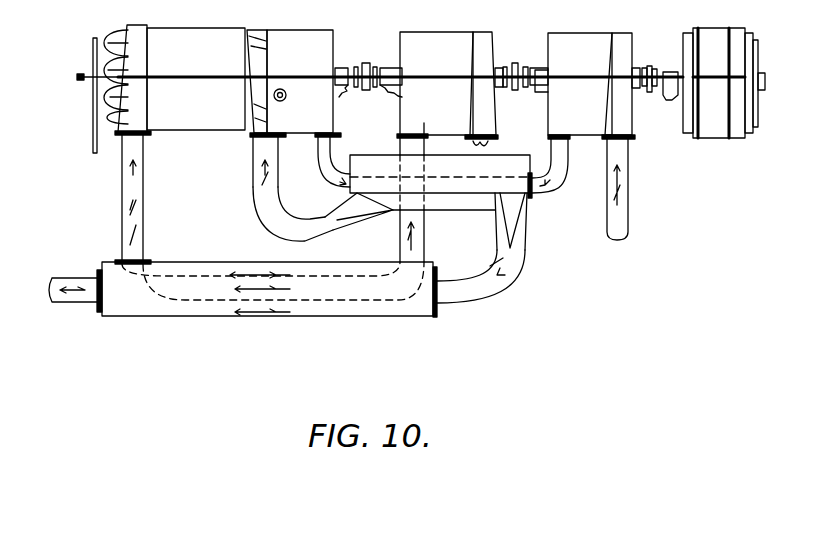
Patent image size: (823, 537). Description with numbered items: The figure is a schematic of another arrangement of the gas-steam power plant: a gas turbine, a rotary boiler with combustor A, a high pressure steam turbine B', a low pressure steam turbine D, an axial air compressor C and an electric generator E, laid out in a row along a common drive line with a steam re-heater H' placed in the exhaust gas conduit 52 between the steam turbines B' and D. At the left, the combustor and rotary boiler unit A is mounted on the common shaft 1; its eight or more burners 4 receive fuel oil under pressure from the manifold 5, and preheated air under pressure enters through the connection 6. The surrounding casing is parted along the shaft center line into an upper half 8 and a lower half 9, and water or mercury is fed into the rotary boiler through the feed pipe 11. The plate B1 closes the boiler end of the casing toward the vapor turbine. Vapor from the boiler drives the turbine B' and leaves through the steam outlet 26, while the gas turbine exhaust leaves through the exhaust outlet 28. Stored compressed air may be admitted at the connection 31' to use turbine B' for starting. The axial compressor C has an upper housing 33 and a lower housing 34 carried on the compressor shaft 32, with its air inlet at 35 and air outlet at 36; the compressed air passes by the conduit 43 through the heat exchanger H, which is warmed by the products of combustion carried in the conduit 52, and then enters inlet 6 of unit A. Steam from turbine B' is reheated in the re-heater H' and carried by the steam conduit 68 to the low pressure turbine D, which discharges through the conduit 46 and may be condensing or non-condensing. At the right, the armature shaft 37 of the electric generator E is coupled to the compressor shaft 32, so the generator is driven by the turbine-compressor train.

The common shaft 1 is at (350, 72).
The burners 4 is at (108, 120).
The manifold 5 is at (92, 140).
The air connection 6 is at (149, 134).
The upper half of casing 8 is at (182, 37).
The lower half of casing 9 is at (187, 112).
The feed pipe 11 is at (80, 78).
The steam outlet 26 is at (330, 134).
The exhaust outlet 28 is at (253, 137).
The compressed air connection 31' is at (297, 94).
The compressor shaft 32 is at (507, 72).
The upper housing 33 is at (422, 42).
The lower housing 34 is at (460, 117).
The air inlet 35 is at (493, 141).
The air outlet 36 is at (407, 132).
The armature shaft 37 is at (657, 70).
The compressed air conduit 43 is at (145, 202).
The turbine discharge conduit 46 is at (328, 155).
The exhaust gas conduit 52 is at (258, 172).
The steam conduit 68 is at (560, 164).
The rotary boiler with combustor A is at (226, 69).
The end plate B1 is at (253, 40).
The high pressure steam turbine B' is at (299, 57).
The axial air compressor C is at (468, 72).
The low pressure steam turbine D is at (585, 86).
The electric generator E is at (724, 83).
The heat exchanger H is at (267, 288).
The steam re-heater H' is at (441, 182).